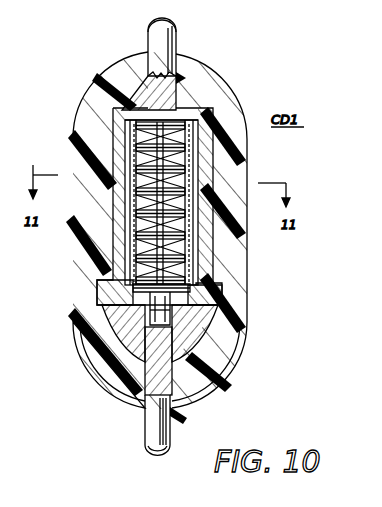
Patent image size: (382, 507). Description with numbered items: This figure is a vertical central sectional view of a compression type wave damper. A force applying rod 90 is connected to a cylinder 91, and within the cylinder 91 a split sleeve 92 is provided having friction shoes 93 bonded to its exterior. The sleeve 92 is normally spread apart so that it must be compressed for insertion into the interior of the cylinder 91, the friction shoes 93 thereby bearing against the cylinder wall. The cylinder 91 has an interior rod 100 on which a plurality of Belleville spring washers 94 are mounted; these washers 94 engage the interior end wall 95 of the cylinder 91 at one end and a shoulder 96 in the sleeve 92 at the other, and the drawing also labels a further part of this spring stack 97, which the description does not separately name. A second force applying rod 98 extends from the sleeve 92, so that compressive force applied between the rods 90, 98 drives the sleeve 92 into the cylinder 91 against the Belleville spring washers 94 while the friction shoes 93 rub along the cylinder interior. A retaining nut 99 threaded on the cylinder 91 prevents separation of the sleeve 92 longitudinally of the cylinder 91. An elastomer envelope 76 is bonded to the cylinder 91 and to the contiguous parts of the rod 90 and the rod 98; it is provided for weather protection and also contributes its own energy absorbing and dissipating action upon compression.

The elastomer envelope 76 is at (78, 346).
The force applying rod 90 is at (177, 36).
The cylinder 91 is at (205, 108).
The split sleeve 92 is at (212, 232).
The friction shoes 93 is at (135, 225).
The Belleville spring washers 94 is at (183, 137).
The interior end wall 95 is at (190, 127).
The shoulder 96 is at (181, 300).
The bellows 97 is at (158, 212).
The force applying rod 98 is at (157, 437).
The retaining nut 99 is at (198, 288).
The interior rod 100 is at (118, 288).